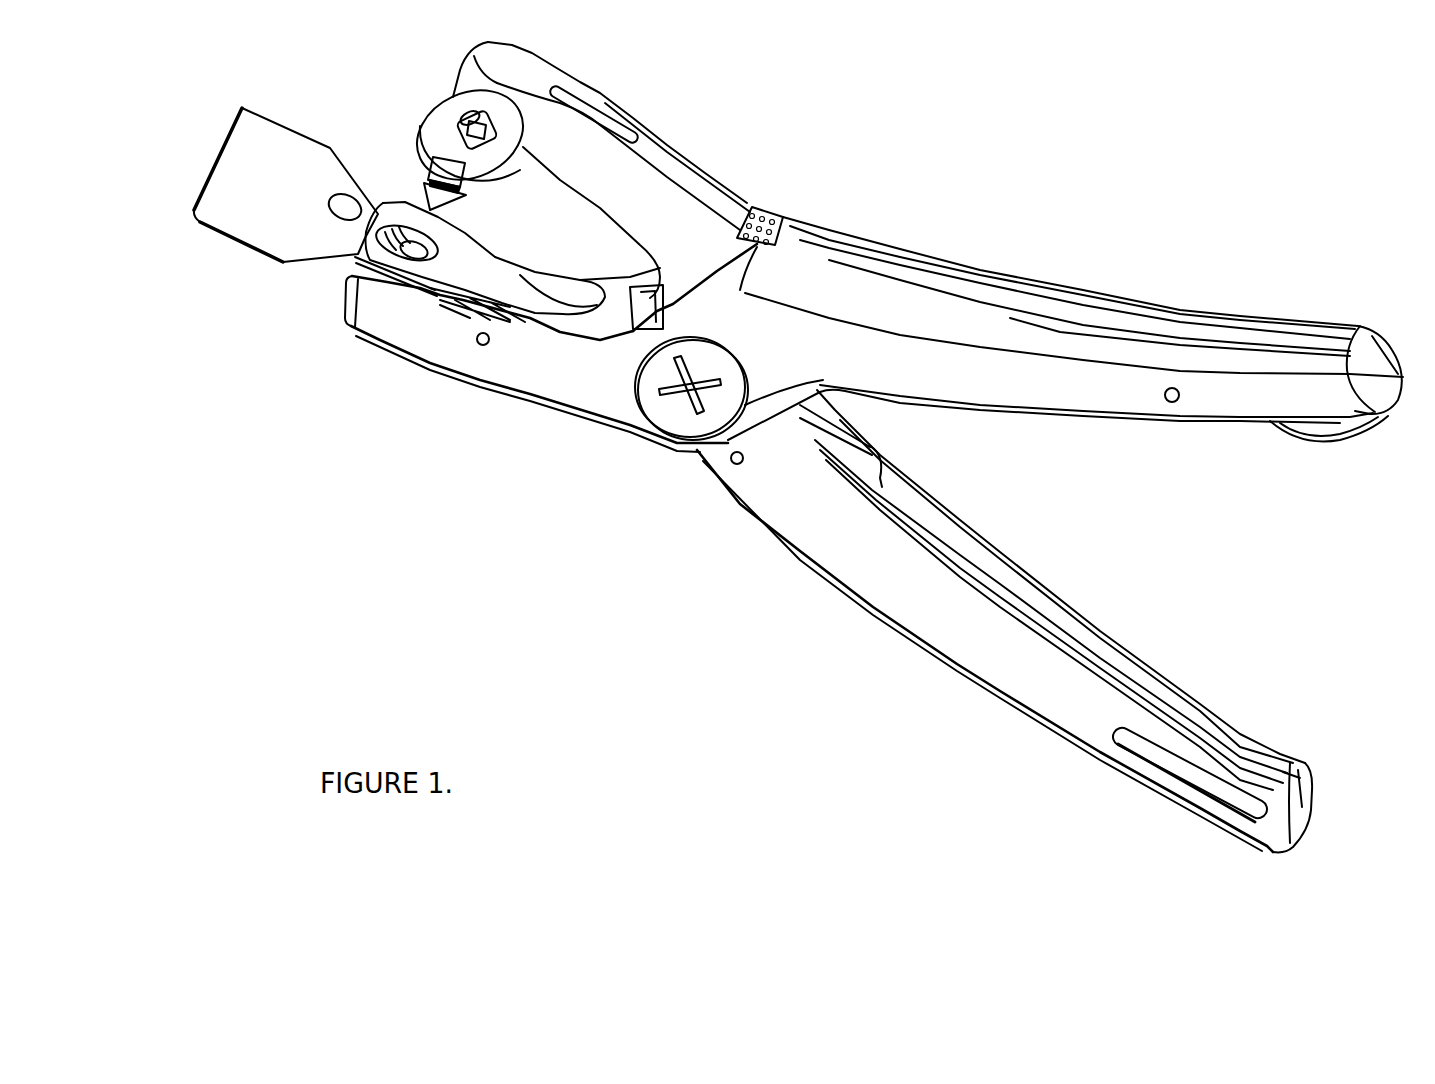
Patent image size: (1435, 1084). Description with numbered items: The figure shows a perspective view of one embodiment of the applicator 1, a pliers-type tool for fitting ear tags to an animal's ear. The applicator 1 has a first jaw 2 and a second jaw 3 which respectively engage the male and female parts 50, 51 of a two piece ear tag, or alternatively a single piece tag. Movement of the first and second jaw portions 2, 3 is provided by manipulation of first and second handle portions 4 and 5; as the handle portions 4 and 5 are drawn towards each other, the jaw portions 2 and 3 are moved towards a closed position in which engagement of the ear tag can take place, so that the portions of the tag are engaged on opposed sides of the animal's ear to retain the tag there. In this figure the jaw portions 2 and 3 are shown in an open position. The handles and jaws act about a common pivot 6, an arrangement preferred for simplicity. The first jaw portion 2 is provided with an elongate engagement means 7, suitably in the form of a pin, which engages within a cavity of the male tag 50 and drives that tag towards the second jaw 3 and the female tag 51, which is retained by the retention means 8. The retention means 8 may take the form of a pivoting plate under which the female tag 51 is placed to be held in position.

The applicator 1 is at (868, 208).
The first jaw 2 is at (625, 130).
The second jaw 3 is at (478, 352).
The first handle portion 4 is at (1085, 328).
The second handle portion 5 is at (1127, 651).
The common pivot 6 is at (670, 415).
The elongate engagement means 7 is at (465, 112).
The retention means 8 is at (458, 268).
The male tag 50 is at (440, 117).
The female tag 51 is at (310, 240).